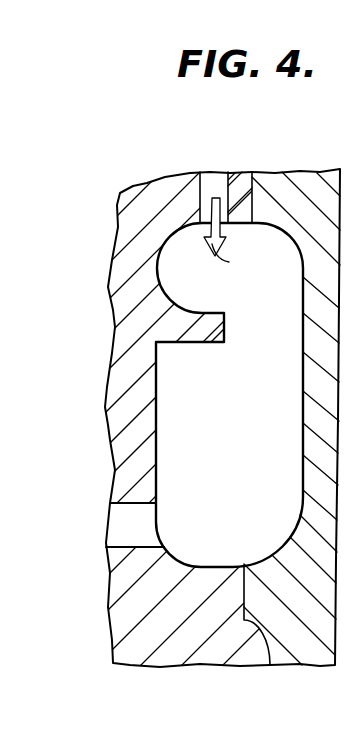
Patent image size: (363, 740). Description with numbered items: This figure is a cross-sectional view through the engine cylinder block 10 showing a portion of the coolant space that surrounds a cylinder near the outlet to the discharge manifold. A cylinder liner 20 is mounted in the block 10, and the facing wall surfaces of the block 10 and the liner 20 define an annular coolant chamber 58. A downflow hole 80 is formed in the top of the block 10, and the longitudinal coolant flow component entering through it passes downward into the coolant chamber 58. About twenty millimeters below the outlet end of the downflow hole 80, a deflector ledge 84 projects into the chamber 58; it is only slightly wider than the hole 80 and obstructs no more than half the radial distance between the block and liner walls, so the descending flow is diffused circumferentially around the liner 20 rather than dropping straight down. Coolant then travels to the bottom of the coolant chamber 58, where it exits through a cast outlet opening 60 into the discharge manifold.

The block 10 is at (127, 352).
The cylinder liner 20 is at (317, 178).
The coolant chamber 58 is at (248, 431).
The cast outlet opening 60 is at (147, 523).
The downflow hole 80 is at (213, 178).
The deflector ledge 84 is at (212, 326).